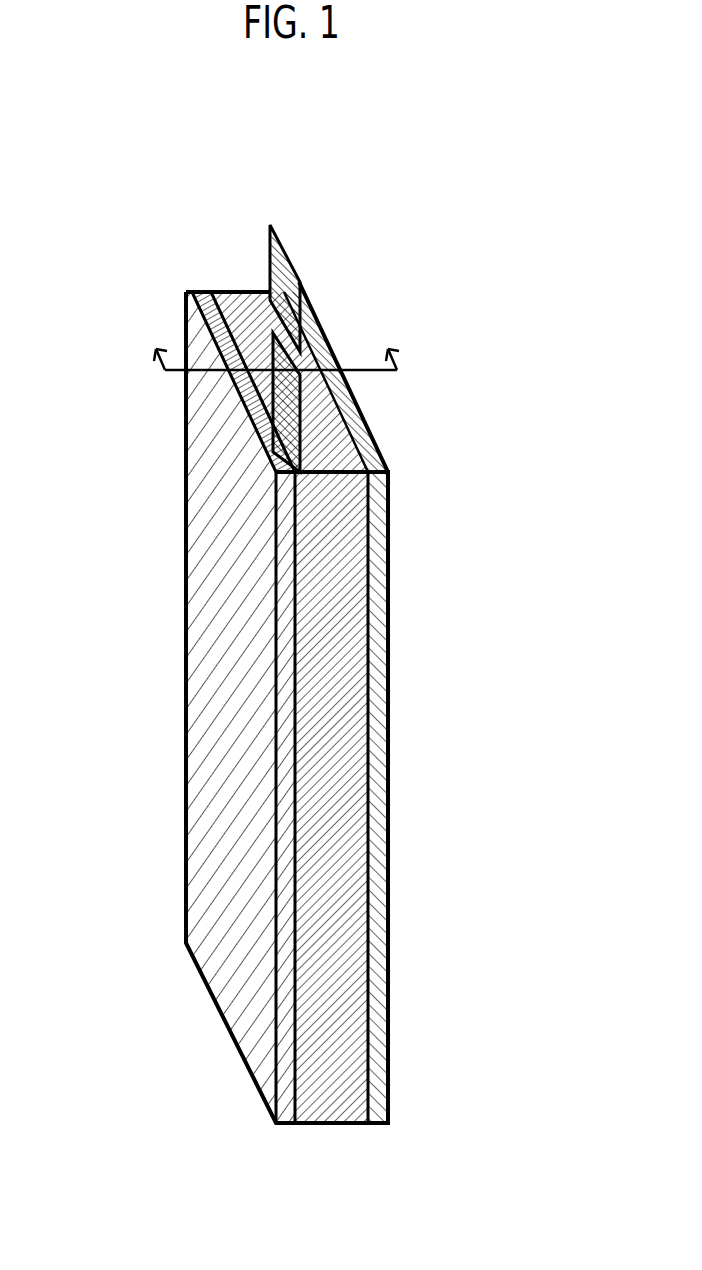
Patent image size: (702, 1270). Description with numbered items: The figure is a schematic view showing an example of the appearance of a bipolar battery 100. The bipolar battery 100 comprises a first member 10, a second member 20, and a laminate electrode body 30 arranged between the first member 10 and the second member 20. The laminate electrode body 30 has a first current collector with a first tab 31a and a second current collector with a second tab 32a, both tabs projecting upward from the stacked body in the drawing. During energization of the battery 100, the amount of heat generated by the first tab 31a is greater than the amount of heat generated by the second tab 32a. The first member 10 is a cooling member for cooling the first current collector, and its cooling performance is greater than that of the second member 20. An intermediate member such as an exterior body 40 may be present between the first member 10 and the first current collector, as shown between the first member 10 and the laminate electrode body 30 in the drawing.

The bipolar battery 100 is at (309, 116).
The first member 10 is at (221, 747).
The second member 20 is at (394, 747).
The laminate electrode body 30 is at (346, 1082).
The first tab 31a is at (288, 388).
The second tab 32a is at (292, 259).
The exterior body 40 is at (350, 483).